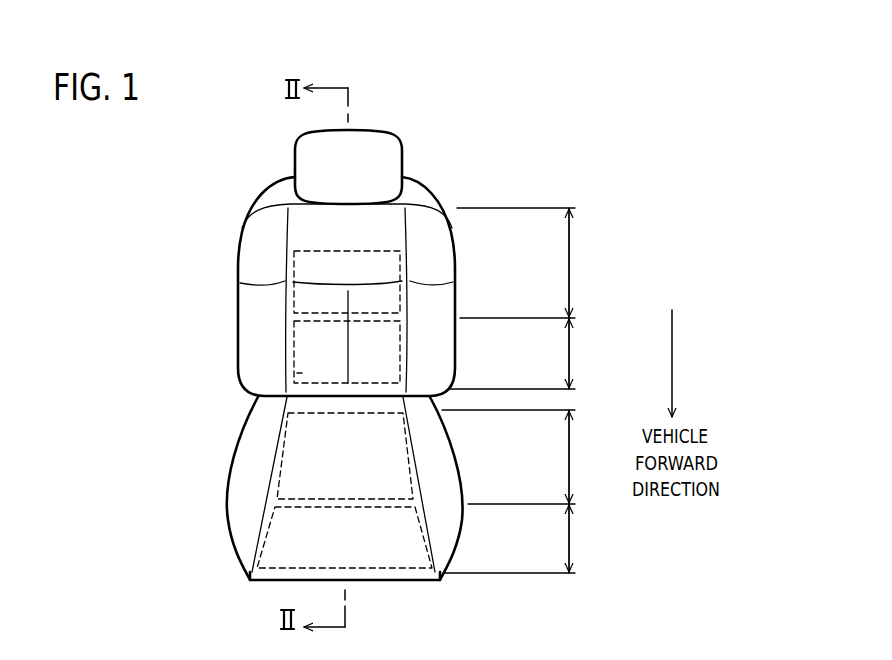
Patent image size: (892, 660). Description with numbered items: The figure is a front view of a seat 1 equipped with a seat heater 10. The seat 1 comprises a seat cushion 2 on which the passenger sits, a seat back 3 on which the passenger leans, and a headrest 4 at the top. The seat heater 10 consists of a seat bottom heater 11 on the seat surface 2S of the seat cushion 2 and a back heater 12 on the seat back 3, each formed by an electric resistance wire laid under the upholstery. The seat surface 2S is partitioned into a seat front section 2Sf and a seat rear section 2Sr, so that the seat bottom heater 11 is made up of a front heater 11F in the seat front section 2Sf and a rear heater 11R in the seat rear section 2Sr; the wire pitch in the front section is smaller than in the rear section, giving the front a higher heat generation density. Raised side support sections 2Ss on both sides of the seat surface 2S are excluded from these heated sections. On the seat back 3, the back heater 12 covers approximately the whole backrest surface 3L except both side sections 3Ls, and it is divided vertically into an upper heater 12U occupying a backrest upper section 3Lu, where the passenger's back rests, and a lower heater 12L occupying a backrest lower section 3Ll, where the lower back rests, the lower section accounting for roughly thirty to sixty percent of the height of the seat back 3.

The seat 1 is at (460, 157).
The seat cushion 2 is at (227, 492).
The seat surface 2S is at (363, 467).
The side support sections 2Ss is at (246, 455).
The seat rear section 2Sr is at (525, 457).
The seat front section 2Sf is at (525, 538).
The seat back 3 is at (236, 267).
The backrest surface 3L is at (366, 241).
The side sections 3Ls is at (257, 246).
The backrest upper section 3Lu is at (533, 263).
The backrest lower section 3Ll is at (527, 353).
The headrest 4 is at (305, 153).
The seat heater 10 is at (305, 374).
The seat bottom heater 11 is at (271, 497).
The rear heater 11R is at (298, 473).
The front heater 11F is at (282, 535).
The back heater 12 is at (262, 317).
The upper heater 12U is at (305, 296).
The lower heater 12L is at (317, 348).